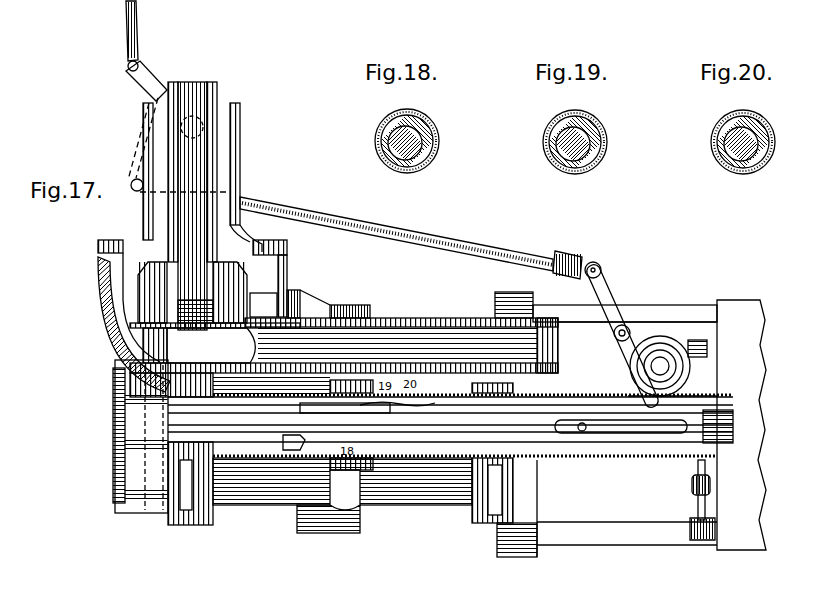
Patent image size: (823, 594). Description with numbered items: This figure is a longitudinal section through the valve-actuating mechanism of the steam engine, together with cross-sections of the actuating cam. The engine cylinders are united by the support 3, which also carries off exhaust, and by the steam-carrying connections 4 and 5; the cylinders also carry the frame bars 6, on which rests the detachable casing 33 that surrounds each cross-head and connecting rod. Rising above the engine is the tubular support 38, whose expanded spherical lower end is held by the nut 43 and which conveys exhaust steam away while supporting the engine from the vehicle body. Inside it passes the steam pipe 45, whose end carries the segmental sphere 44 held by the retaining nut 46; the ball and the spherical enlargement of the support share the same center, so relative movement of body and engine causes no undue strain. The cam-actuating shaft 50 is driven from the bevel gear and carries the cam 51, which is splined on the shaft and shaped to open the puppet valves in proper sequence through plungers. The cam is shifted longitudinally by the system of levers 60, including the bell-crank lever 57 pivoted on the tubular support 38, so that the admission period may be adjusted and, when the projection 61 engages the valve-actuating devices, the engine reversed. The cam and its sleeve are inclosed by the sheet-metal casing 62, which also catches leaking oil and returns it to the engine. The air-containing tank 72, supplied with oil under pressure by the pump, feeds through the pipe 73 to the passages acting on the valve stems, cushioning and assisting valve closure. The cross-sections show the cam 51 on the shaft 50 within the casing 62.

In FIG. 17, the support 3 is at (345, 307).
In FIG. 17, the steam-carrying connection 4 is at (495, 505).
In FIG. 17, the steam-carrying connection 5 is at (188, 505).
In FIG. 17, the frame bars 6 is at (648, 307).
In FIG. 17, the detachable casing 33 is at (745, 304).
In FIG. 17, the tubular support 38 is at (240, 177).
In FIG. 17, the nut 43 is at (97, 247).
In FIG. 17, the segmental sphere 44 is at (199, 345).
In FIG. 17, the steam pipe 45 is at (215, 147).
In FIG. 17, the retaining nut 46 is at (247, 275).
In FIG. 17, the cam-actuating shaft 50 is at (240, 430).
In FIG. 18, the cam-actuating shaft 50 is at (392, 140).
In FIG. 19, the cam-actuating shaft 50 is at (560, 140).
In FIG. 20, the cam-actuating shaft 50 is at (730, 131).
In FIG. 17, the cam 51 is at (378, 406).
In FIG. 18, the cam 51 is at (428, 128).
In FIG. 19, the cam 51 is at (592, 130).
In FIG. 20, the cam 51 is at (765, 135).
In FIG. 17, the bell-crank lever 57 is at (150, 92).
In FIG. 17, the system of levers 60 is at (458, 243).
In FIG. 17, the projection 61 is at (295, 442).
In FIG. 17, the sheet-metal casing 62 is at (580, 458).
In FIG. 18, the sheet-metal casing 62 is at (401, 171).
In FIG. 19, the sheet-metal casing 62 is at (577, 173).
In FIG. 20, the sheet-metal casing 62 is at (747, 173).
In FIG. 17, the tank 72 is at (680, 342).
In FIG. 17, the pipe 73 is at (443, 388).